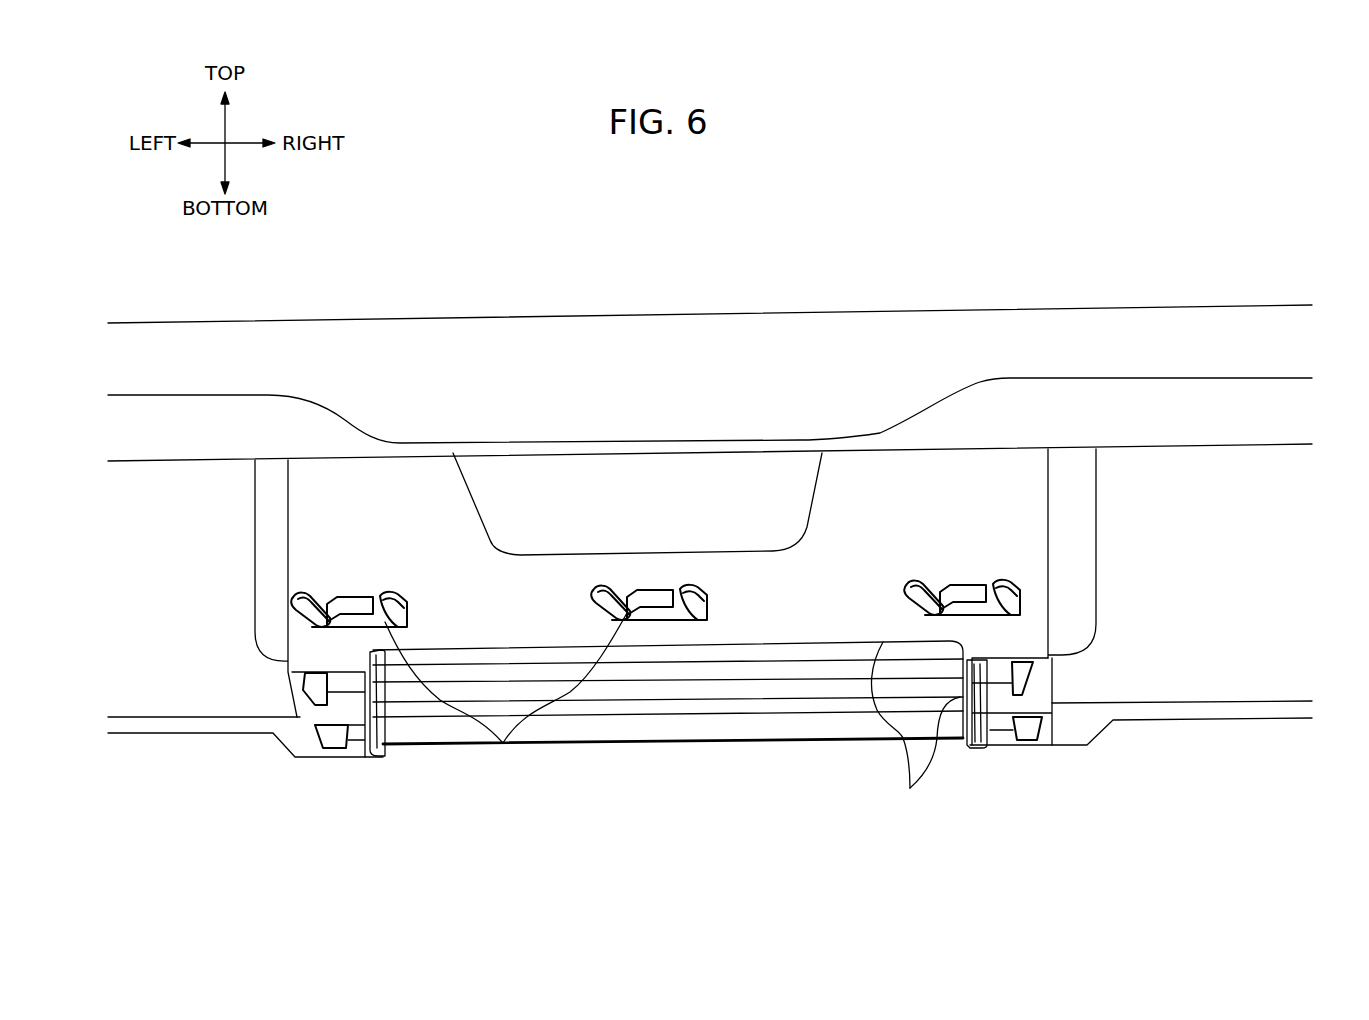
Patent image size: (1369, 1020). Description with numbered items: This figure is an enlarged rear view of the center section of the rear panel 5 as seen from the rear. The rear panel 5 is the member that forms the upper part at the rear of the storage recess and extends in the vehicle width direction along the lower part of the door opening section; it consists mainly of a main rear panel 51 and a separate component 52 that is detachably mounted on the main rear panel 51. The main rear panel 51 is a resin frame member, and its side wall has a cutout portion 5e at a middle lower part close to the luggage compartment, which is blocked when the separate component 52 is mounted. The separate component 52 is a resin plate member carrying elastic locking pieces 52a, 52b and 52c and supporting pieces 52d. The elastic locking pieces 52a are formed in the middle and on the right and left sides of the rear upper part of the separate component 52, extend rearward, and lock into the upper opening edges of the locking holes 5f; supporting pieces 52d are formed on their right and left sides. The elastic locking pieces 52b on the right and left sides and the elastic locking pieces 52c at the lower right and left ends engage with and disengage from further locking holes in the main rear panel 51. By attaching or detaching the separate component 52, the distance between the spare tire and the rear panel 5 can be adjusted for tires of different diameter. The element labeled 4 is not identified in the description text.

The upper panel 4 is at (661, 313).
The rear panel 5 is at (1106, 380).
The cutout portion 5e is at (910, 788).
The locking hole 5f is at (503, 744).
The main rear panel 51 is at (1209, 719).
The separate component 52 is at (803, 636).
The elastic locking piece 52a is at (265, 630).
The elastic locking piece 52b is at (303, 689).
The elastic locking piece 52c is at (316, 735).
The supporting piece 52d is at (375, 602).